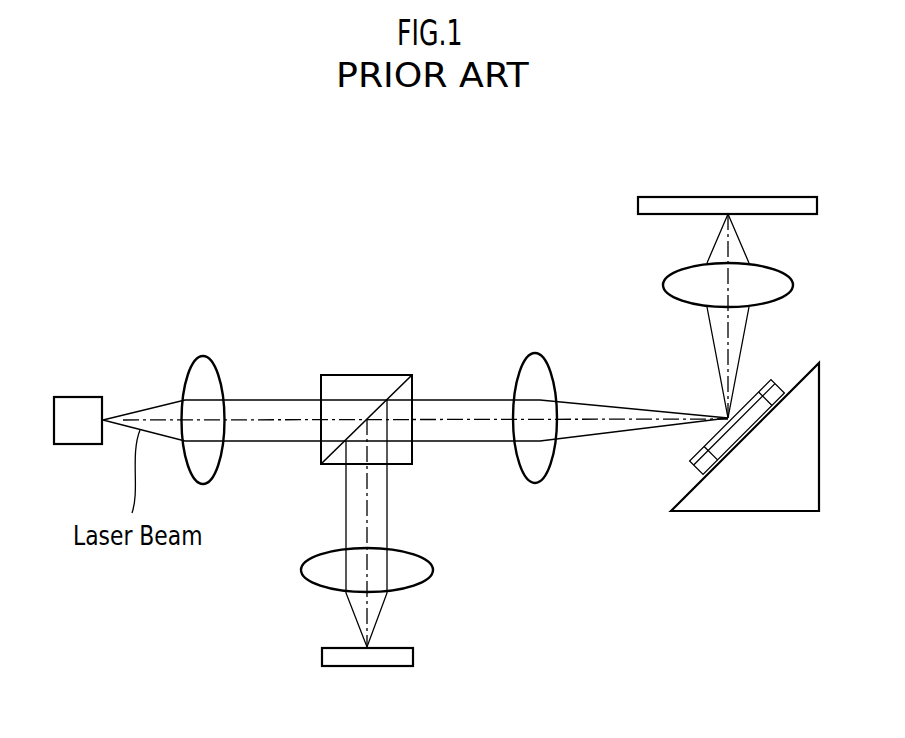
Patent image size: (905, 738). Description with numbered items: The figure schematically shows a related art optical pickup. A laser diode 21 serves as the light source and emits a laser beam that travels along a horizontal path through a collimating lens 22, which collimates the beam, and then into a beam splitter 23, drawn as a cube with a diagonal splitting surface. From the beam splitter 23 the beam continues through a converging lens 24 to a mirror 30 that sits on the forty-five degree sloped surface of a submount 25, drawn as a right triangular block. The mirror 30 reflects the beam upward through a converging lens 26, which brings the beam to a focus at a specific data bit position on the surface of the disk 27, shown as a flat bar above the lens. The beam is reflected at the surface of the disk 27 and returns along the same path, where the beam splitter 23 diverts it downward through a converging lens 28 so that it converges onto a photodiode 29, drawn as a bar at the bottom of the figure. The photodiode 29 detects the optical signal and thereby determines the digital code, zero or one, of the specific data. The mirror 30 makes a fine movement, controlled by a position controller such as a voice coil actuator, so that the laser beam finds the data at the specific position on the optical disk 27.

The laser diode 21 is at (78, 387).
The collimating lens 22 is at (203, 388).
The beam splitter 23 is at (366, 385).
The converging lens 24 is at (535, 454).
The submount 25 is at (745, 476).
The converging lens 26 is at (687, 285).
The disk 27 is at (693, 209).
The converging lens 28 is at (334, 571).
The photodiode 29 is at (404, 658).
The mirror 30 is at (758, 385).